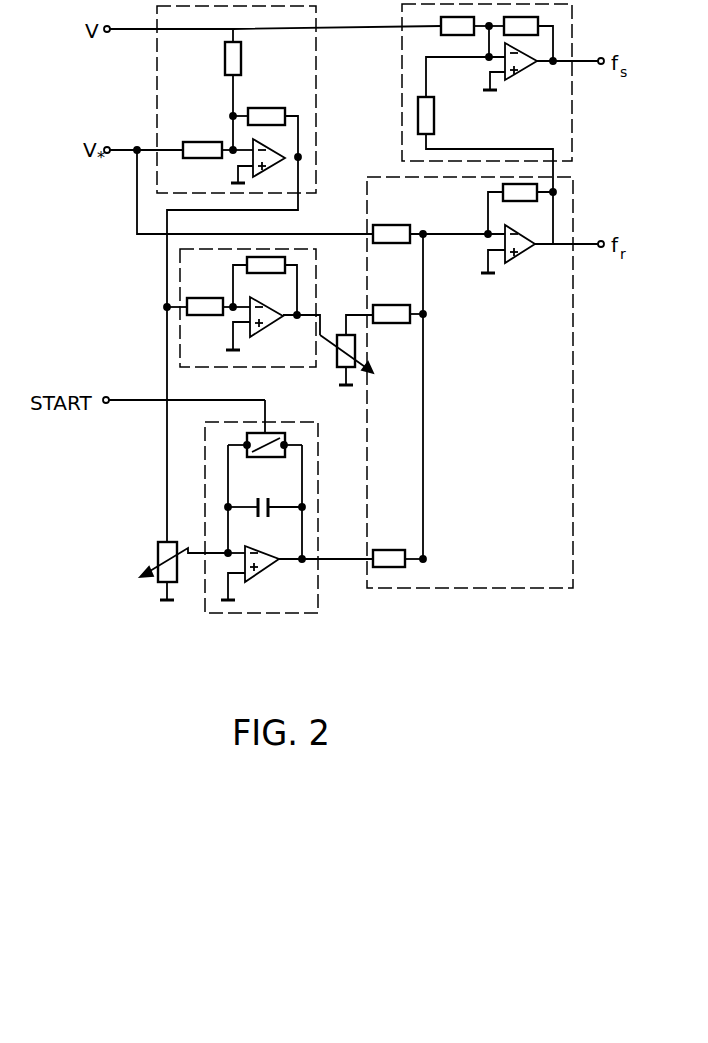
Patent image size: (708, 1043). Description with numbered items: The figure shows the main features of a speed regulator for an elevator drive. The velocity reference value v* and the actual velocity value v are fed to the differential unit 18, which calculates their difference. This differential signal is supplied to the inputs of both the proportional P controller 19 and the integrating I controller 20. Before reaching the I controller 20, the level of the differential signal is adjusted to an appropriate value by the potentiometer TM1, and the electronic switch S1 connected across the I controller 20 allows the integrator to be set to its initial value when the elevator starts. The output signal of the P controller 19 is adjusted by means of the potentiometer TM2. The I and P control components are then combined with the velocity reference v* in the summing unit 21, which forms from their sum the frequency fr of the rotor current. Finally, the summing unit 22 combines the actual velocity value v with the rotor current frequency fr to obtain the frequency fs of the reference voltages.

The differential unit 18 is at (316, 126).
The P controller 19 is at (180, 343).
The I controller 20 is at (318, 530).
The summing unit 21 is at (495, 588).
The summing unit 22 is at (402, 83).
The potentiometer TM1 is at (157, 571).
The potentiometer TM2 is at (329, 356).
The electronic switch S1 is at (285, 434).